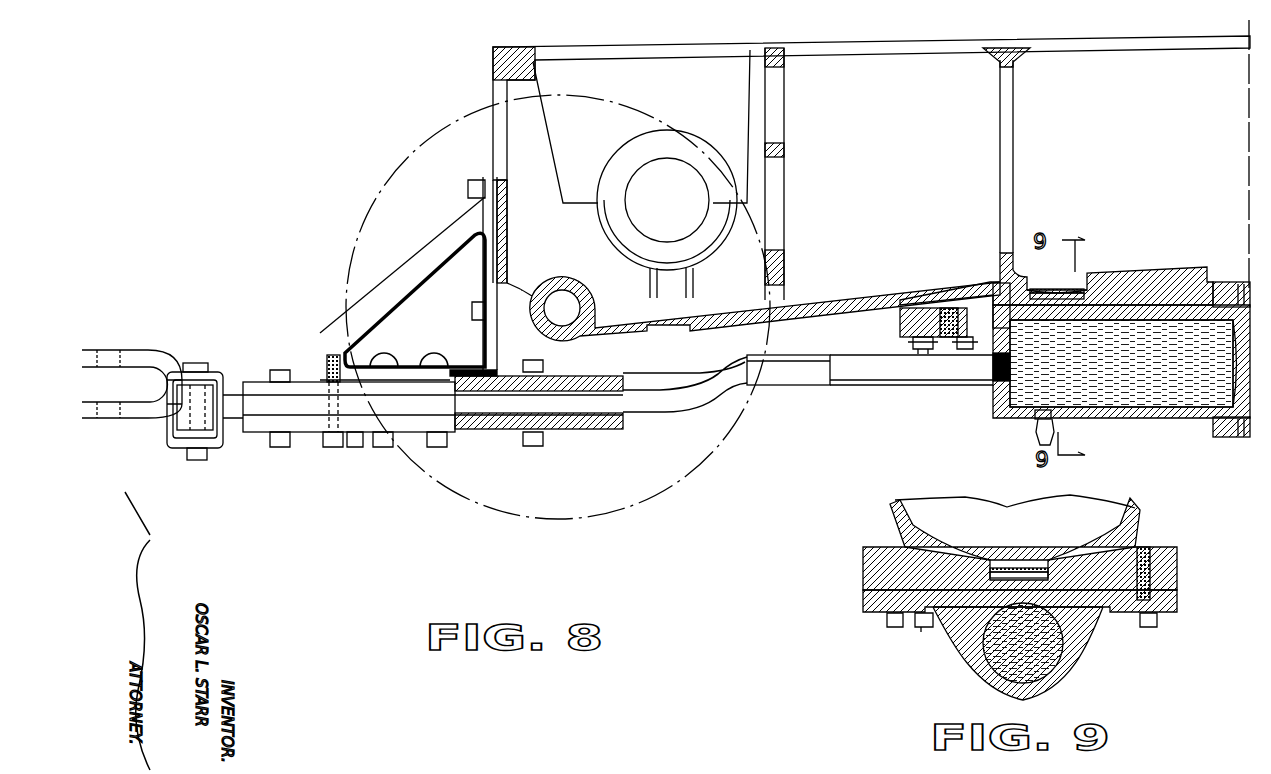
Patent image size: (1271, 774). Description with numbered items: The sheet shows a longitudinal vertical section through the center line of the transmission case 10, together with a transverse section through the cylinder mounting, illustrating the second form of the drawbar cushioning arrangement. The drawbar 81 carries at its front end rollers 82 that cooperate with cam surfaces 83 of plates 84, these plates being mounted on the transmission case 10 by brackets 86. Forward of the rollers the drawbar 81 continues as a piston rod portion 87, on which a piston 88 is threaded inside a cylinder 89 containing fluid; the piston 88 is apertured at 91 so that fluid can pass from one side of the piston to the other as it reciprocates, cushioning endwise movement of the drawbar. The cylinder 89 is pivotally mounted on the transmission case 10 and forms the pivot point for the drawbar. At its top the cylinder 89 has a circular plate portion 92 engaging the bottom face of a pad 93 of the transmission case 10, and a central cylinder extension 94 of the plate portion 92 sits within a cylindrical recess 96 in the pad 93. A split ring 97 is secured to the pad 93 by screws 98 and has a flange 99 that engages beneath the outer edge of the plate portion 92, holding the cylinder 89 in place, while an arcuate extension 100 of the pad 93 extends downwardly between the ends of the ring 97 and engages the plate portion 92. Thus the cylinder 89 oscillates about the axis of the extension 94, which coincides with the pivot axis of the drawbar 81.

In FIG. 8, the transmission case 10 is at (847, 302).
In FIG. 9, the transmission case 10 is at (913, 532).
In FIG. 8, the drawbar 81 is at (657, 405).
In FIG. 8, the rollers 82 is at (210, 392).
In FIG. 8, the cam surfaces 83 is at (305, 388).
In FIG. 8, the plates 84 is at (480, 415).
In FIG. 8, the brackets 86 is at (420, 278).
In FIG. 8, the piston rod portion 87 is at (885, 375).
In FIG. 8, the piston 88 is at (998, 330).
In FIG. 8, the cylinder 89 is at (1113, 410).
In FIG. 9, the cylinder 89 is at (1062, 680).
In FIG. 8, the aperture 91 is at (1017, 395).
In FIG. 8, the circular plate portion 92 is at (950, 308).
In FIG. 9, the circular plate portion 92 is at (1125, 592).
In FIG. 8, the pad 93 is at (1150, 292).
In FIG. 9, the pad 93 is at (890, 575).
In FIG. 8, the central cylinder extension 94 is at (1055, 296).
In FIG. 9, the central cylinder extension 94 is at (1022, 577).
In FIG. 8, the cylindrical recess 96 is at (1085, 290).
In FIG. 9, the cylindrical recess 96 is at (990, 568).
In FIG. 8, the split ring 97 is at (900, 325).
In FIG. 9, the split ring 97 is at (870, 605).
In FIG. 8, the screws 98 is at (920, 350).
In FIG. 9, the screws 98 is at (897, 627).
In FIG. 8, the flange 99 is at (947, 338).
In FIG. 9, the flange 99 is at (927, 610).
In FIG. 8, the arcuate extension 100 is at (1193, 302).